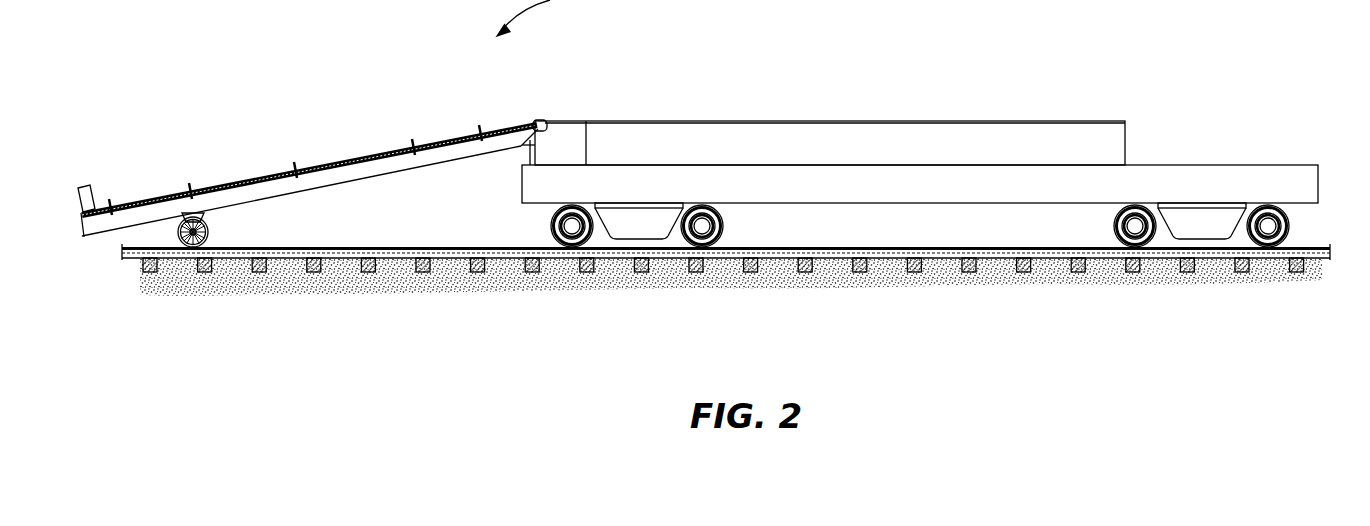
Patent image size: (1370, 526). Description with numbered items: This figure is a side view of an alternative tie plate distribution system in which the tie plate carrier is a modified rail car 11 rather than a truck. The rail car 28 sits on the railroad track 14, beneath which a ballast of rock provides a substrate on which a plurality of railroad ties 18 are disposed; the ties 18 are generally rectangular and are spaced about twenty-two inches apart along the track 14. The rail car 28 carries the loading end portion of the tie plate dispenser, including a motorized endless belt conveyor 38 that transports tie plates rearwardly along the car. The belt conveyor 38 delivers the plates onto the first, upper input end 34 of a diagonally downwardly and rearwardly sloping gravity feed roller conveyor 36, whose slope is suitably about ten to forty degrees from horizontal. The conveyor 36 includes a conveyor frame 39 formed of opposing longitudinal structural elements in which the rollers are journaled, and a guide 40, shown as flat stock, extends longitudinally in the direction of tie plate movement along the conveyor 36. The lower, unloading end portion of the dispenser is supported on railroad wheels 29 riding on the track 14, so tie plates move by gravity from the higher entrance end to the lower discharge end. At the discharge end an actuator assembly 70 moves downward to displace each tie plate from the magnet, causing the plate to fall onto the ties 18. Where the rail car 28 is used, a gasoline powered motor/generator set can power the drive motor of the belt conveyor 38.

The modified rail car 11 is at (887, 135).
The railroad track 14 is at (455, 249).
The railroad ties 18 is at (915, 275).
The rail car 28 is at (917, 146).
The railroad wheels 29 is at (193, 248).
The upper input end 34 is at (540, 118).
The conveyor 36 is at (402, 138).
The belt conveyor 38 is at (830, 109).
The conveyor frame 39 is at (422, 176).
The guide 40 is at (207, 170).
The actuator assembly 70 is at (308, 211).